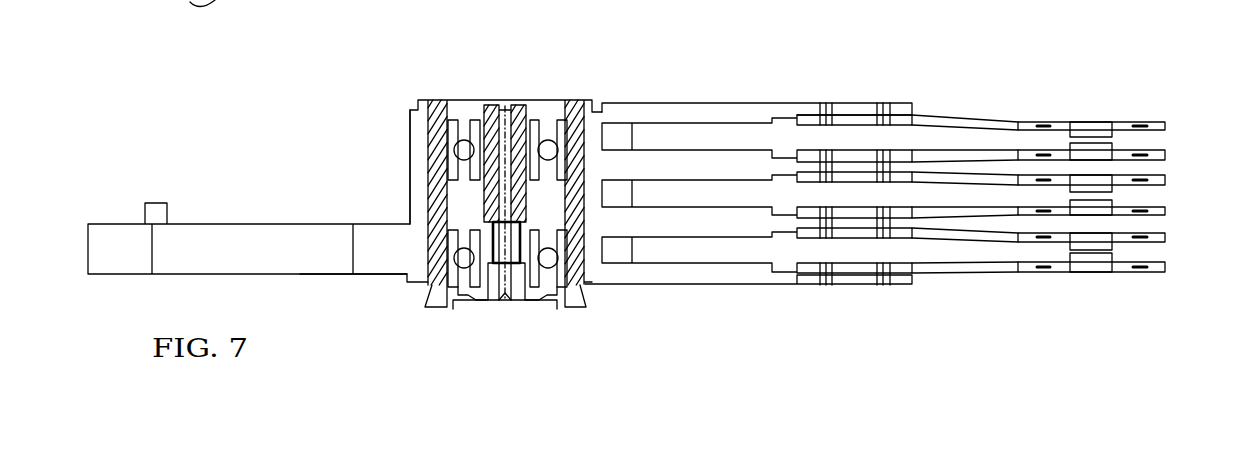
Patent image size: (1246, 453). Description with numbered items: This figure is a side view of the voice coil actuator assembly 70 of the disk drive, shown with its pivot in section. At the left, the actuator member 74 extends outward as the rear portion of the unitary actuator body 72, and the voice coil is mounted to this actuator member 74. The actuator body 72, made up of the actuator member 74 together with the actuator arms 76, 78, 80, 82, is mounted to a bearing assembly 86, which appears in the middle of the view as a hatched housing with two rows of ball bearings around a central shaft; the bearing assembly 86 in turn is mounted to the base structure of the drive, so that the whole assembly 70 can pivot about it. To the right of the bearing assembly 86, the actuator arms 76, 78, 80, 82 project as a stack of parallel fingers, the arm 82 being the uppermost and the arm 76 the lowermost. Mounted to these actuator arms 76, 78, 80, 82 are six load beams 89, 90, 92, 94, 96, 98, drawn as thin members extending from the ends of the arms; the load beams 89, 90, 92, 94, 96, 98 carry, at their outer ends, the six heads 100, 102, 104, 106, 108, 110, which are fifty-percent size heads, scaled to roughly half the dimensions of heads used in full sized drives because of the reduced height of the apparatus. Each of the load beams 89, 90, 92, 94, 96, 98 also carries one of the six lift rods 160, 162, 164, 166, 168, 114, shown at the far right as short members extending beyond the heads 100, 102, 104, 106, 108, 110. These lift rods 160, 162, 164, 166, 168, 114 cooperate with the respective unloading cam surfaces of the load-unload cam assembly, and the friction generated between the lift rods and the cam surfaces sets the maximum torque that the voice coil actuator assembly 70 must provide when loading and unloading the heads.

The voice coil actuator assembly 70 is at (373, 204).
The actuator body 72 is at (618, 300).
The actuator member 74 is at (372, 270).
The actuator arm 76 is at (723, 278).
The actuator arm 78 is at (663, 224).
The actuator arm 80 is at (710, 160).
The actuator arm 82 is at (645, 108).
The bearing assembly 86 is at (512, 80).
The load beam 89 is at (922, 276).
The load beam 90 is at (963, 233).
The load beam 92 is at (953, 214).
The load beam 94 is at (962, 176).
The load beam 96 is at (923, 160).
The load beam 98 is at (958, 116).
The head 100 is at (1100, 263).
The head 102 is at (1078, 246).
The head 104 is at (1060, 204).
The head 106 is at (1075, 187).
The head 108 is at (1073, 148).
The head 110 is at (1102, 132).
The lift rod 114 is at (1168, 126).
The lift rod 160 is at (1168, 267).
The lift rod 162 is at (1168, 237).
The lift rod 164 is at (1168, 211).
The lift rod 166 is at (1168, 180).
The lift rod 168 is at (1168, 155).